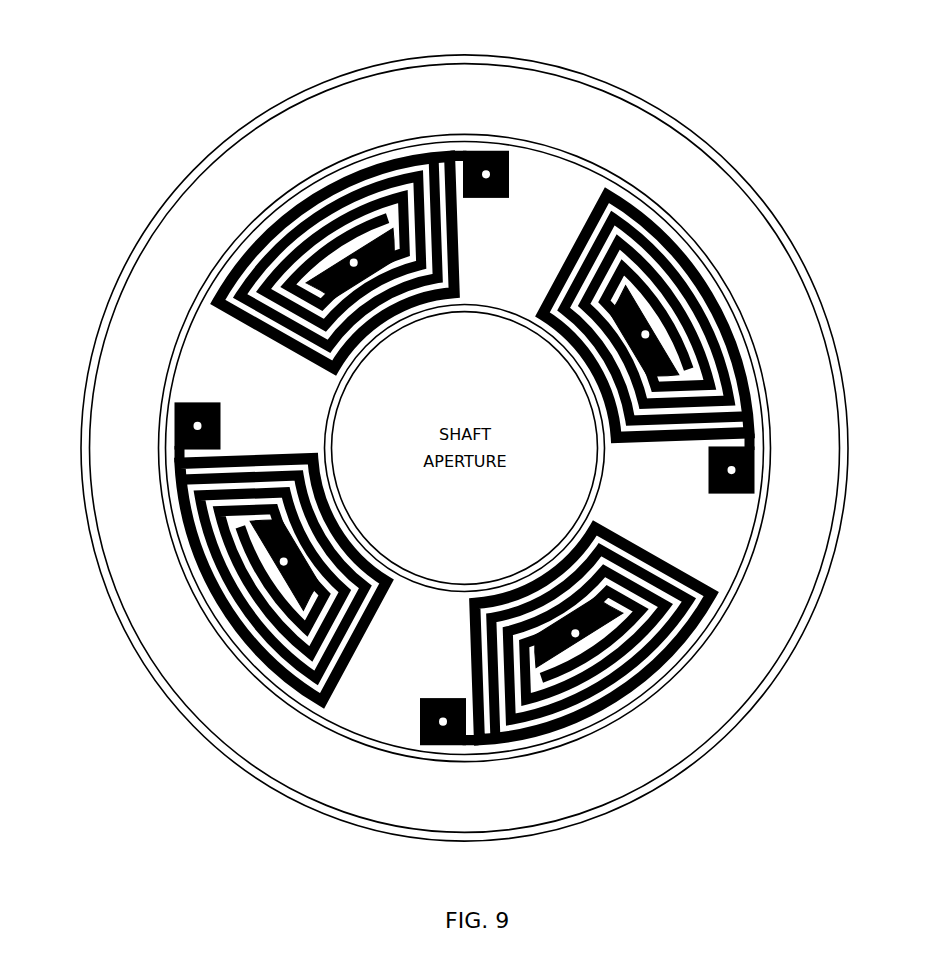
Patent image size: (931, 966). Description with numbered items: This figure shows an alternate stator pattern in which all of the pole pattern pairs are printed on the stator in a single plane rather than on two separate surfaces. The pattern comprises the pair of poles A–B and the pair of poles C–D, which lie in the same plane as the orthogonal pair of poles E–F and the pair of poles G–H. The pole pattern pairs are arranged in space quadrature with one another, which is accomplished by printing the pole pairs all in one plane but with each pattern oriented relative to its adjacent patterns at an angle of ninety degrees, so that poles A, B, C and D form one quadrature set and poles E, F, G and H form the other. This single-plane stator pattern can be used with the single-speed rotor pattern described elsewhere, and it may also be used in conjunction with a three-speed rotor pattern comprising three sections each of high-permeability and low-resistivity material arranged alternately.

The pole A is at (384, 225).
The pole B is at (487, 150).
The pole C is at (552, 656).
The pole D is at (440, 738).
The pole E is at (273, 588).
The pole F is at (165, 430).
The pole G is at (632, 287).
The pole H is at (745, 462).